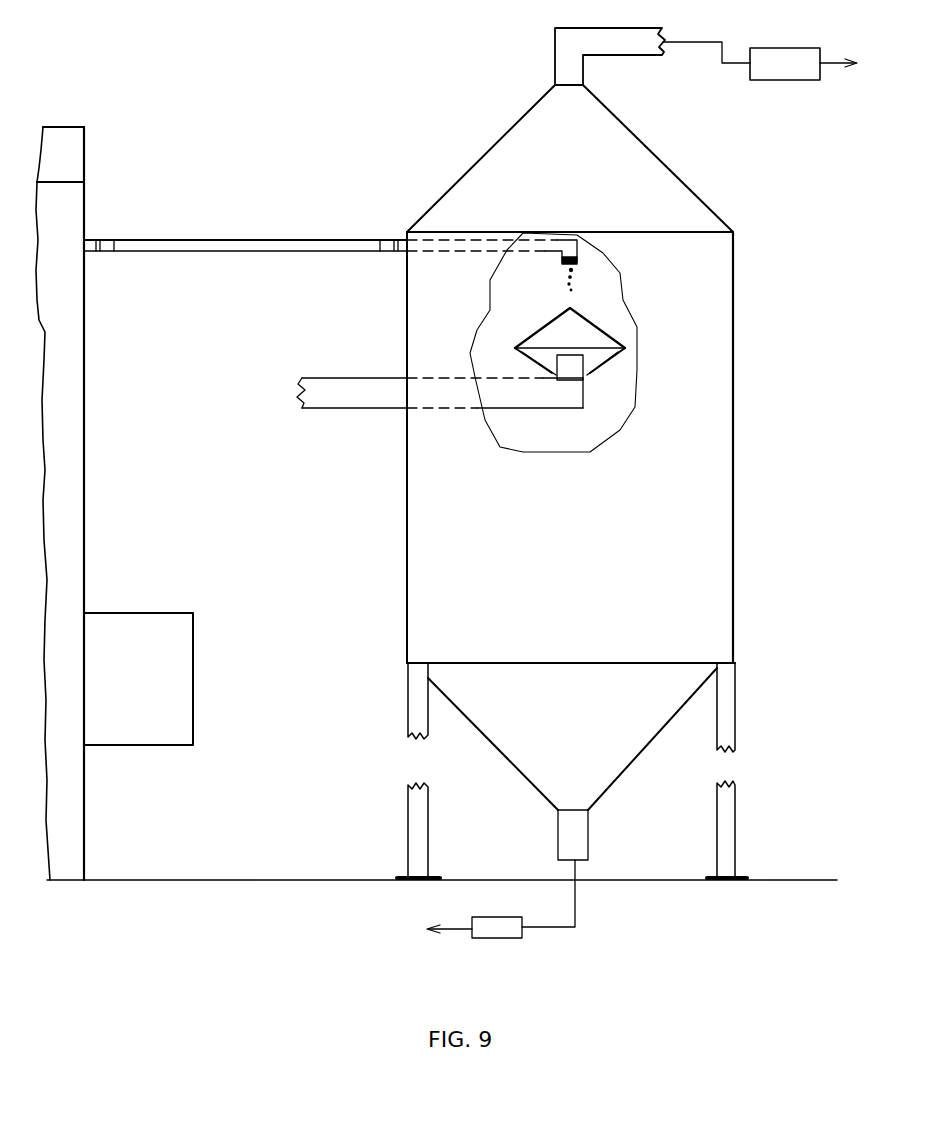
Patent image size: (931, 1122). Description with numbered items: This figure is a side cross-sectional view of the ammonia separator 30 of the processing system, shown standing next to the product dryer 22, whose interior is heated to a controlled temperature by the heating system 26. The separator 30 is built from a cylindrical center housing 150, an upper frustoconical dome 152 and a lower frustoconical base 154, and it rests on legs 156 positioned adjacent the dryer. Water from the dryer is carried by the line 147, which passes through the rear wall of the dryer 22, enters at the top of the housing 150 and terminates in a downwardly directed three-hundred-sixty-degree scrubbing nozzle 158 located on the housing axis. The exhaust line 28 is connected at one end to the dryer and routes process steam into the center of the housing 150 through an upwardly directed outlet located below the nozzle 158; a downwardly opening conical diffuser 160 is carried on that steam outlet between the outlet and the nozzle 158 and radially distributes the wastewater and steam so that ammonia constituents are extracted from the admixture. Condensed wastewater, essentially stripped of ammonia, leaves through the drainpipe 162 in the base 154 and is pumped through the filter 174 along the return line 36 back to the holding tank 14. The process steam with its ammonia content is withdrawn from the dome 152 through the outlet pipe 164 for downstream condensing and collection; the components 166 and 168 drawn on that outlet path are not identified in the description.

The holding tank 14 is at (432, 930).
The product dryer 22 is at (87, 360).
The heating system 26 is at (145, 731).
The exhaust line 28 is at (350, 402).
The ammonia separator 30 is at (752, 524).
The return line 36 is at (557, 928).
The line 147 is at (231, 243).
The cylindrical center housing 150 is at (735, 615).
The upper frustoconical dome 152 is at (693, 188).
The lower frustoconical base 154 is at (695, 692).
The legs 156 is at (730, 800).
The scrubbing nozzle 158 is at (577, 258).
The conical diffuser 160 is at (570, 364).
The drainpipe 162 is at (575, 853).
The outlet pipe 164 is at (560, 50).
The blower 166 is at (772, 68).
The exhaust outlet 168 is at (843, 72).
The filter 174 is at (490, 932).